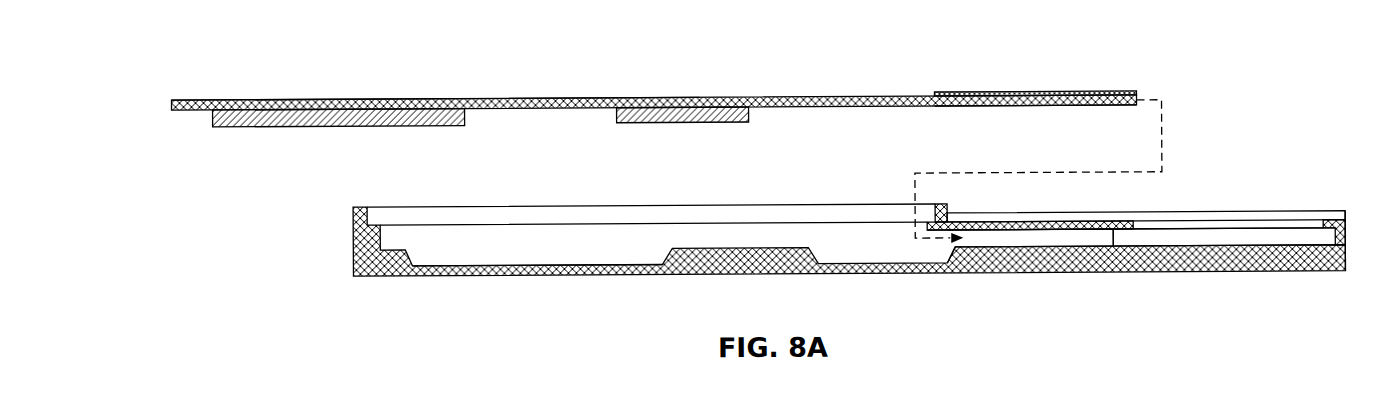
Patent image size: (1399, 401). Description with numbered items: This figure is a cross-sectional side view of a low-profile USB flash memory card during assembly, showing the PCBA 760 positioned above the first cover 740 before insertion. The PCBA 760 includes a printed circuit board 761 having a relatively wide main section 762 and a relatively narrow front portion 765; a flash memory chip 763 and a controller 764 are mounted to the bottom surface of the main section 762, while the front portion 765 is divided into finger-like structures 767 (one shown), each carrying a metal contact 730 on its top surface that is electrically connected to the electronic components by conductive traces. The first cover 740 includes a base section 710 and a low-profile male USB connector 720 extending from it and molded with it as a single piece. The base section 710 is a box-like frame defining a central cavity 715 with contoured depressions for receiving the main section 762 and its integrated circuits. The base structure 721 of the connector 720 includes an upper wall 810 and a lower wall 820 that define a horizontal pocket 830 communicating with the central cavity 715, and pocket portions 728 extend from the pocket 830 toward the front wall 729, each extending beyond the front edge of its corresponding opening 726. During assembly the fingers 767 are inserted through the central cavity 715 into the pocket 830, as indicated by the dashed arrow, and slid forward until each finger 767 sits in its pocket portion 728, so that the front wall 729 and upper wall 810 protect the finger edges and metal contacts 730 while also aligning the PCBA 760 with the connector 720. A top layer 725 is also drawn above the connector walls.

The PCBA 760 is at (305, 62).
The printed circuit board 761 is at (232, 95).
The main section 762 is at (512, 95).
The flash memory chip 763 is at (293, 124).
The controller 764 is at (650, 123).
The front portion 765 is at (830, 95).
The metal contact 730 is at (1103, 91).
The finger-like structure 767 is at (1072, 109).
The first cover 740 is at (362, 203).
The central cavity 715 is at (577, 257).
The base section 710 is at (582, 276).
The low-profile male USB connector 720 is at (1053, 276).
The top layer 725 is at (1228, 216).
The opening 726 is at (1334, 226).
The pocket portion 728 is at (1278, 240).
The front wall 729 is at (1347, 243).
The lower wall 820 is at (1057, 224).
The upper wall 810 is at (1063, 245).
The base structure 721 is at (1141, 285).
The pocket 830 is at (990, 237).